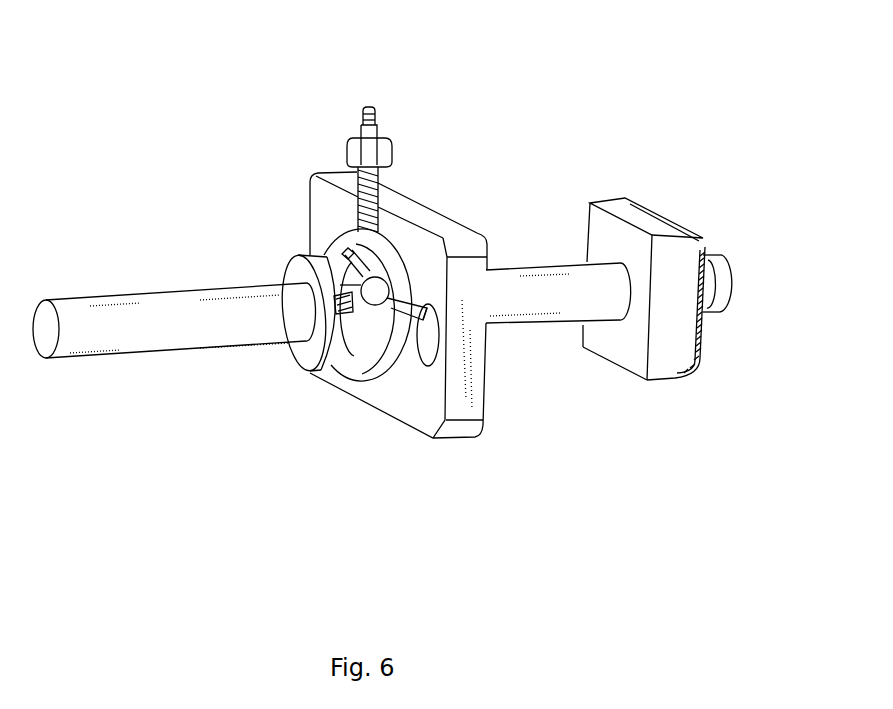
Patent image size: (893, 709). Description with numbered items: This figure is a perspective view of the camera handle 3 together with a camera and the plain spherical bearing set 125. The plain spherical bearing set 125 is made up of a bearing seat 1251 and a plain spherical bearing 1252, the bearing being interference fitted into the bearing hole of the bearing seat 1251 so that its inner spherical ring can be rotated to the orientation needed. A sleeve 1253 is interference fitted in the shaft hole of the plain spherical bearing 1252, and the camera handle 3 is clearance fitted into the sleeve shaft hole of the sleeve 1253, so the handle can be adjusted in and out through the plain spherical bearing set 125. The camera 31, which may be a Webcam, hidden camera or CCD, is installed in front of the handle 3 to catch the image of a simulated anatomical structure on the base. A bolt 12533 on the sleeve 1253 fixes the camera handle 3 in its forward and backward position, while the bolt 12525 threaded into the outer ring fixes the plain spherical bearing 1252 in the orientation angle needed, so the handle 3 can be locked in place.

The camera handle 3 is at (130, 330).
The camera 31 is at (667, 263).
The plain spherical bearing set 125 is at (273, 97).
The bearing seat 1251 is at (465, 380).
The plain spherical bearing 1252 is at (375, 352).
The sleeve 1253 is at (310, 268).
The bolt 12525 is at (372, 158).
The bolt 12533 is at (370, 290).